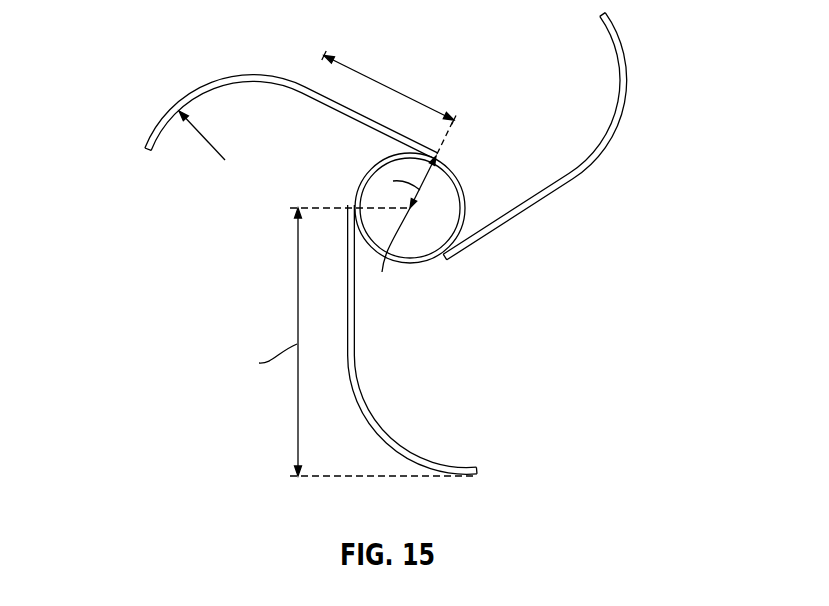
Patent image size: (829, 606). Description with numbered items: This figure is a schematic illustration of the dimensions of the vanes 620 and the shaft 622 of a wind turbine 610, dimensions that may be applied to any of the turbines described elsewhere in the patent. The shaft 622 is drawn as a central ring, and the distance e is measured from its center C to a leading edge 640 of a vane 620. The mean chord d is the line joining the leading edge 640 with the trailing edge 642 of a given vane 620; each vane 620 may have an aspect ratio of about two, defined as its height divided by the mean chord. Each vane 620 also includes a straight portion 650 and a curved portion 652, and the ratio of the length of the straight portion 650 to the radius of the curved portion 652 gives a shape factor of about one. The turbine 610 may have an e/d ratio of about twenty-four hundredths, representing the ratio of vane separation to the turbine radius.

The wind turbine 610 is at (383, 238).
The vane 620 is at (624, 121).
The shaft 622 is at (461, 187).
The leading edge 640 is at (350, 206).
The trailing edge 642 is at (143, 141).
The straight portion 650 is at (385, 85).
The curved portion 652 is at (205, 150).